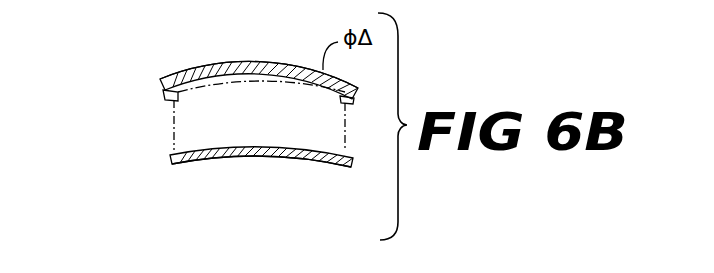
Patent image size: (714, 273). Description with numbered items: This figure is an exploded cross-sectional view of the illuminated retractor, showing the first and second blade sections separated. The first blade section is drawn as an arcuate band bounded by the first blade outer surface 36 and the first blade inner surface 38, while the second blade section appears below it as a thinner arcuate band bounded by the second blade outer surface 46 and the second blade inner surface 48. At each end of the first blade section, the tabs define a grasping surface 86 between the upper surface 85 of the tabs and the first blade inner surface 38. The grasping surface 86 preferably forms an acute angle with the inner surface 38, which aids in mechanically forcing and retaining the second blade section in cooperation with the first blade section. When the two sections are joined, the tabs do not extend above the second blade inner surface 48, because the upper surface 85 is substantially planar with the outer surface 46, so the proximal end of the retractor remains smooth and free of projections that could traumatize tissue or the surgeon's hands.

The first blade outer surface 36 is at (268, 63).
The first blade inner surface 38 is at (229, 63).
The second blade outer surface 46 is at (209, 148).
The second blade inner surface 48 is at (275, 160).
The upper surface 85 is at (173, 108).
The grasping surface 86 is at (166, 92).